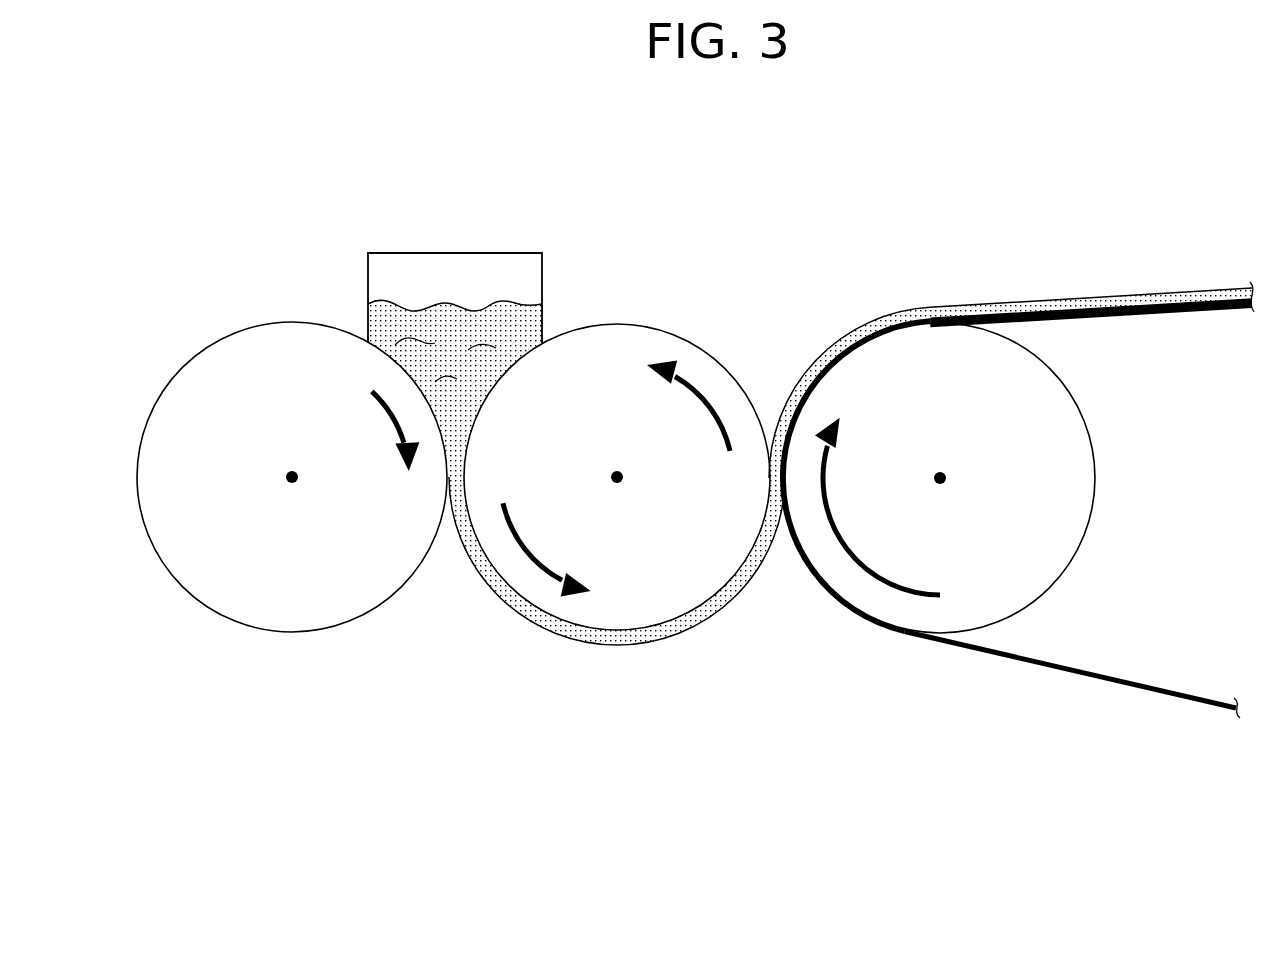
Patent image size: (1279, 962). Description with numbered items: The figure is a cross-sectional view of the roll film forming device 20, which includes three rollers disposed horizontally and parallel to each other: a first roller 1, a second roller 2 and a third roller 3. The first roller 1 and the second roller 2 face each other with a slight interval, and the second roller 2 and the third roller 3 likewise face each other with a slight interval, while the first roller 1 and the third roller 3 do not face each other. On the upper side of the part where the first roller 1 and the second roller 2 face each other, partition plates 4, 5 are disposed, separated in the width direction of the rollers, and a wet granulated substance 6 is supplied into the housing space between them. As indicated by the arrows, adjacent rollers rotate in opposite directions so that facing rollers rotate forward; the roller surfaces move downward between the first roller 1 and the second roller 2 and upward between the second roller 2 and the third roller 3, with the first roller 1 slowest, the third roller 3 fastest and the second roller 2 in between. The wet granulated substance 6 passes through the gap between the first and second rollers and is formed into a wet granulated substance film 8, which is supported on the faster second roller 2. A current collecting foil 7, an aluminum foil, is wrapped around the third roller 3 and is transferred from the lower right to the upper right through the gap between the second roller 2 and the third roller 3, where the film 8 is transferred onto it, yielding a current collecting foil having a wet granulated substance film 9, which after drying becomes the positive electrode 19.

The first roller 1 is at (238, 588).
The second roller 2 is at (625, 340).
The third roller 3 is at (1078, 430).
The partition plate 4 is at (455, 316).
The partition plate 5 is at (497, 260).
The wet granulated substance 6 is at (433, 307).
The current collecting foil 7 is at (1085, 670).
The wet granulated substance film 8 is at (688, 625).
The current collecting foil having a wet granulated substance film 9 is at (1017, 395).
The positive electrode 19 is at (1076, 297).
The roll film forming device 20 is at (750, 254).